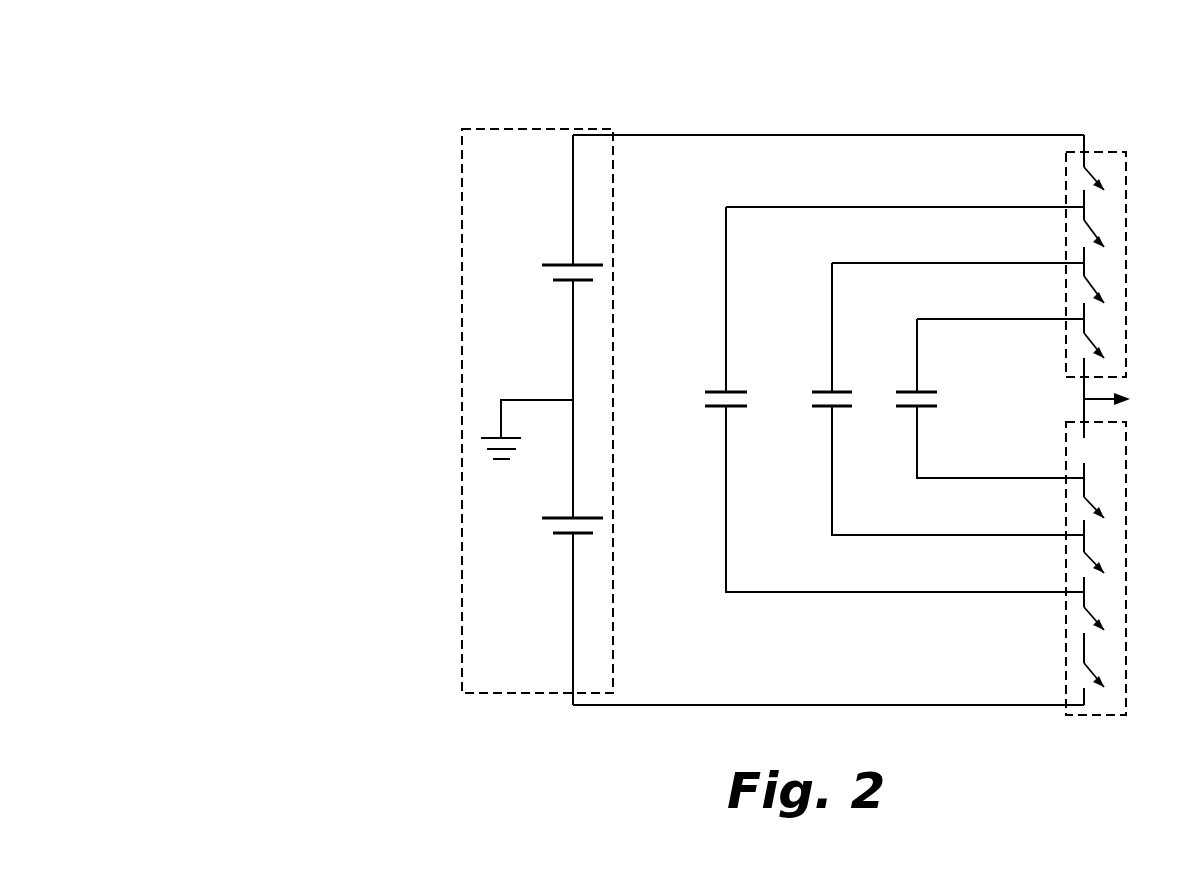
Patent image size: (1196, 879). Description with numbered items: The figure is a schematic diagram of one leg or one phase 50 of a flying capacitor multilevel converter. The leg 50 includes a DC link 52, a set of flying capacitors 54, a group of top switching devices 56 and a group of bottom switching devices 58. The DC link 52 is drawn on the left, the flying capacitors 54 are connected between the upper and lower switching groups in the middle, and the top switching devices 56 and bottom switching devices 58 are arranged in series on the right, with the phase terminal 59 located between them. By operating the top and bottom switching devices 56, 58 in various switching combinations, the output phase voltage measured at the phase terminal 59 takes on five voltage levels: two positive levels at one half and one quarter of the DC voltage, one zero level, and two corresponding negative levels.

The leg of flying capacitor multilevel converter 50 is at (168, 113).
The DC link 52 is at (435, 158).
The flying capacitors 54 is at (720, 391).
The top switching devices 56 is at (1126, 152).
The bottom switching devices 58 is at (1126, 498).
The phase terminal 59 is at (1130, 399).